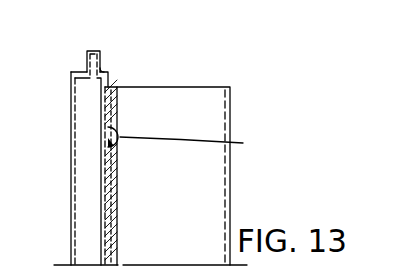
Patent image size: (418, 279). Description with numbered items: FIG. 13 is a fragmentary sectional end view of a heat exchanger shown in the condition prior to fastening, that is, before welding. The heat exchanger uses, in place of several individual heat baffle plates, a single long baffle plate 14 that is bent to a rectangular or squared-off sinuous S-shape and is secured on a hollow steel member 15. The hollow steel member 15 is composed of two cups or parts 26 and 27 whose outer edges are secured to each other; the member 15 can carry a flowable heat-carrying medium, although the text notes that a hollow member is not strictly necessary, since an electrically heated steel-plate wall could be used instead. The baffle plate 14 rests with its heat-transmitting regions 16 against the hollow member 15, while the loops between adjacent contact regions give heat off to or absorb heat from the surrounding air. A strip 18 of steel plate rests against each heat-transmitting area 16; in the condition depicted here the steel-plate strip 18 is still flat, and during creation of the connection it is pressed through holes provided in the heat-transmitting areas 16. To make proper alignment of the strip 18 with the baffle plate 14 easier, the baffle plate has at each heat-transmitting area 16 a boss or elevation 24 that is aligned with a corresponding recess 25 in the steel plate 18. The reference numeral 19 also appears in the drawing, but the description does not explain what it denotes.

The baffle plate 14 is at (183, 92).
The hollow steel member 15 is at (101, 66).
The heat-transmitting region 16 is at (107, 198).
The strip of steel plate 18 is at (117, 173).
The sleeve 19 is at (107, 109).
The boss 24 is at (101, 138).
The recess 25 is at (196, 144).
The cup 26 is at (70, 247).
The cup 27 is at (109, 72).